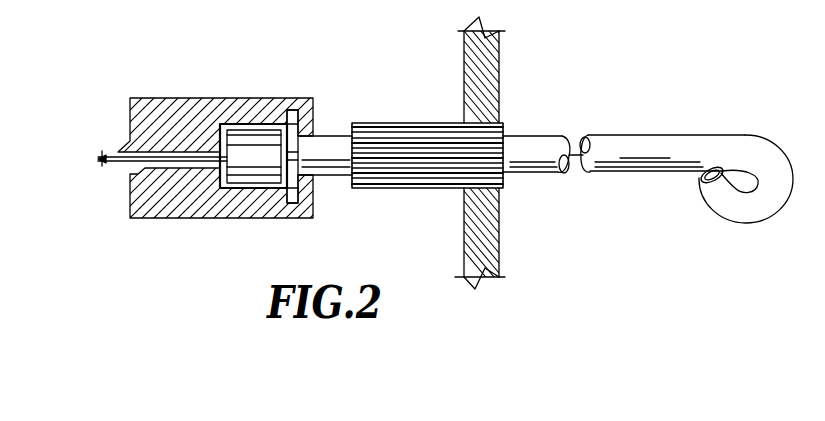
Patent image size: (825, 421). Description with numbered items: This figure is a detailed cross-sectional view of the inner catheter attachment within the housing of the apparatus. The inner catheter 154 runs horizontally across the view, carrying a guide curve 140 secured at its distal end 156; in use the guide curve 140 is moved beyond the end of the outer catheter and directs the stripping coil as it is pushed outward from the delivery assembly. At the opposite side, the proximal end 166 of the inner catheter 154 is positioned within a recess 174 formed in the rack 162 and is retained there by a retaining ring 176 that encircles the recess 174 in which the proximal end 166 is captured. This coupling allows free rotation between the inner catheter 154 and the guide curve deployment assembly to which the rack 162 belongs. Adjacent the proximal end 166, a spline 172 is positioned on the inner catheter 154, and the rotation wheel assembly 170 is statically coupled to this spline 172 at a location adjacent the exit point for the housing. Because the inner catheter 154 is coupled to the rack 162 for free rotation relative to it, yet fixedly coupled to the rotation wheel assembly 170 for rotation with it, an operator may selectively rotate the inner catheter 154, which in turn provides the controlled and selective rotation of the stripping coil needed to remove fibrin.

The rack 162 is at (213, 98).
The recess 174 is at (222, 190).
The retaining ring 176 is at (294, 146).
The proximal end 166 is at (337, 177).
The spline 172 is at (393, 121).
The rotation wheel assembly 170 is at (498, 252).
The inner catheter 154 is at (532, 135).
The distal end 156 is at (785, 157).
The guide curve 140 is at (716, 200).